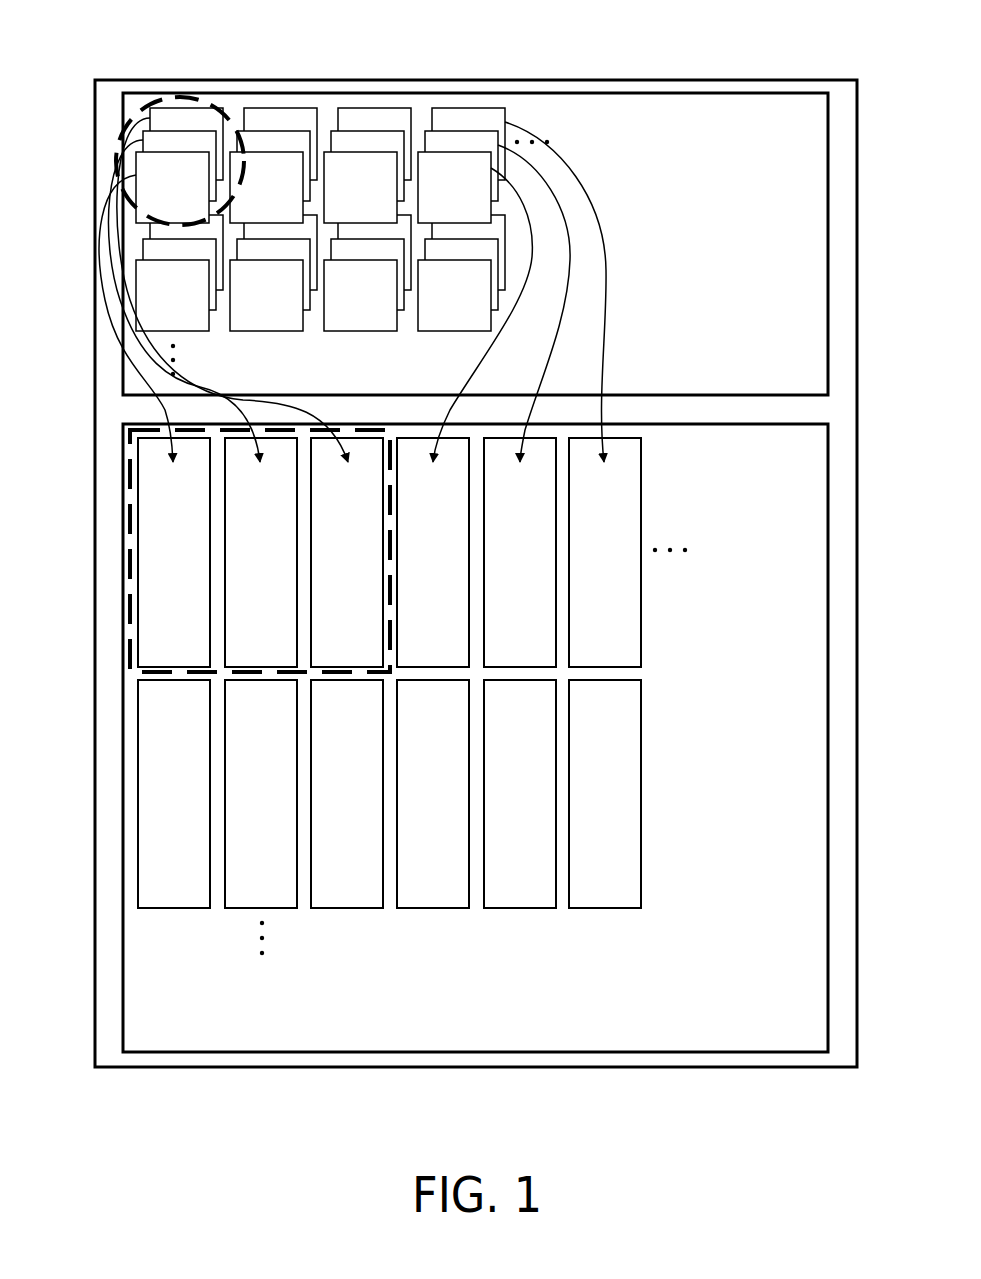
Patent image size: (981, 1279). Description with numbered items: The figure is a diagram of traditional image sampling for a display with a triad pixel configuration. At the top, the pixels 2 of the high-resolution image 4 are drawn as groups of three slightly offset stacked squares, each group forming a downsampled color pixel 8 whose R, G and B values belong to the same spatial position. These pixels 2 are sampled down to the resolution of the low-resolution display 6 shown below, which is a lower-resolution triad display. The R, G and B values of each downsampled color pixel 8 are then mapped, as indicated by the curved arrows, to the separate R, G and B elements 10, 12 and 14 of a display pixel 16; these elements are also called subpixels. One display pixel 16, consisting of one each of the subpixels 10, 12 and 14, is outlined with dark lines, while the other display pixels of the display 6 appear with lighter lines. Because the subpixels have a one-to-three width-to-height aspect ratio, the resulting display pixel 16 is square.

The pixels 2 is at (497, 63).
The high-resolution image 4 is at (807, 330).
The low-resolution display 6 is at (807, 502).
The downsampled color pixel 8 is at (138, 103).
The R element 10 is at (160, 629).
The G element 12 is at (247, 629).
The B element 14 is at (333, 629).
The display pixel 16 is at (130, 482).